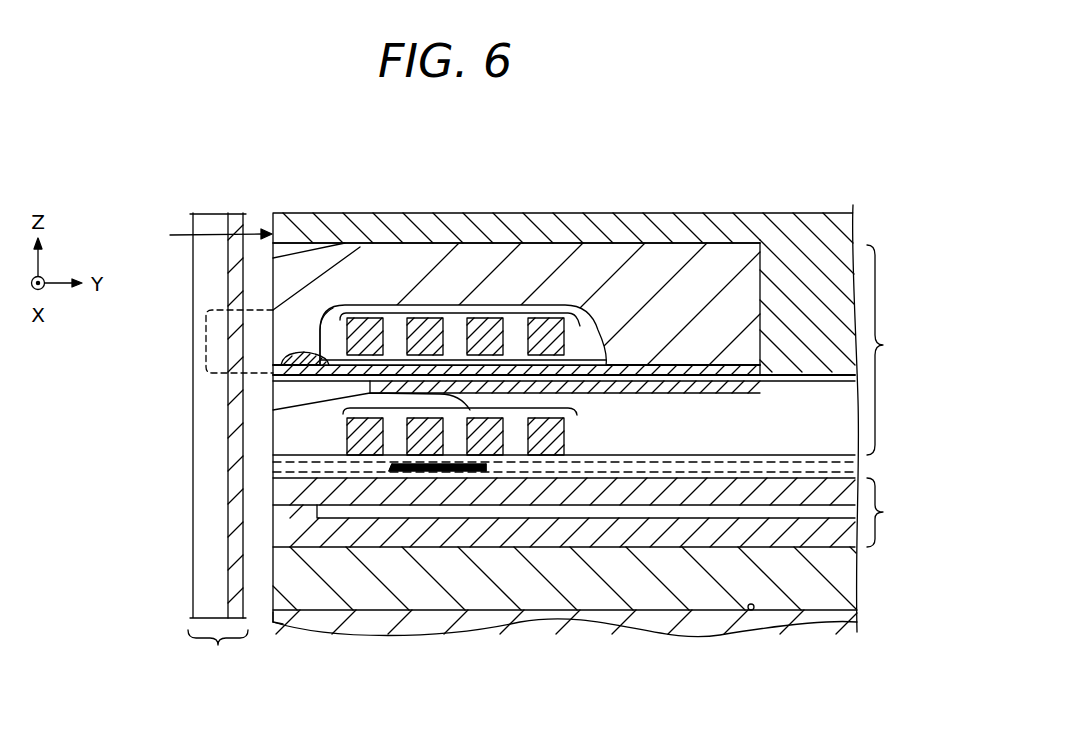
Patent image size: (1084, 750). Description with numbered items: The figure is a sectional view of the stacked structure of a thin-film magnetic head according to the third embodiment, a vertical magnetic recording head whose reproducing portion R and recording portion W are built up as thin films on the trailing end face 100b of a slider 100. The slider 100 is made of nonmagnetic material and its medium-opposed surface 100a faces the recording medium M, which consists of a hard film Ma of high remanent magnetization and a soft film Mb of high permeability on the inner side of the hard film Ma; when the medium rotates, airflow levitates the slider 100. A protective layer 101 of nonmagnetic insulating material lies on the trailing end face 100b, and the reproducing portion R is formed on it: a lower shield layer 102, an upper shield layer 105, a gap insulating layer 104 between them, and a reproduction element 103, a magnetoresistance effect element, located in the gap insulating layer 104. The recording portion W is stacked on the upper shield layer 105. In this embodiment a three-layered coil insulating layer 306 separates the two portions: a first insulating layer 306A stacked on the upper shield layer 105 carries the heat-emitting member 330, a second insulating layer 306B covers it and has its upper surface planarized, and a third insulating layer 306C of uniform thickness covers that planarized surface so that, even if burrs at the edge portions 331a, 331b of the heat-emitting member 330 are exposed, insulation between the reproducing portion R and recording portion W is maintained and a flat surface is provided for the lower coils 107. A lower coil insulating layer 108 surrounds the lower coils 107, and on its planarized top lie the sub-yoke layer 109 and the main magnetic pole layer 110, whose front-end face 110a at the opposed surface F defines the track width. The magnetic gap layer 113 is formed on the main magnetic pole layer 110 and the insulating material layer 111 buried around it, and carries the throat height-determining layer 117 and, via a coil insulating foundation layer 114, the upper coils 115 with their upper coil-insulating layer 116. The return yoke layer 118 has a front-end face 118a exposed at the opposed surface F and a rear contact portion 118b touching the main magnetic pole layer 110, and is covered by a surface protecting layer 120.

The slider 100 is at (688, 623).
The medium-opposed surface 100a is at (274, 622).
The trailing end face 100b is at (754, 612).
The protective layer 101 is at (282, 598).
The lower shield layer 102 is at (282, 513).
The reproduction element 103 is at (282, 528).
The gap insulating layer 104 is at (630, 520).
The upper shield layer 105 is at (280, 490).
The lower coil 107 is at (378, 396).
The lower coil insulating layer 108 is at (292, 430).
The sub-yoke layer 109 is at (400, 387).
The main magnetic pole layer 110 is at (345, 372).
The front-end face 110a is at (330, 362).
The insulating material layer 111 is at (818, 370).
The magnetic gap layer 113 is at (298, 357).
The coil insulating foundation layer 114 is at (597, 312).
The upper coil 115 is at (470, 306).
The upper coil-insulating layer 116 is at (392, 307).
The throat height-determining layer 117 is at (318, 330).
The return yoke layer 118 is at (545, 262).
The front-end face 118a is at (275, 262).
The contact portion 118b is at (709, 272).
The surface protecting layer 120 is at (437, 232).
The coil insulating layer 306 is at (101, 449).
The first insulating layer 306A is at (280, 475).
The second insulating layer 306B is at (280, 466).
The third insulating layer 306C is at (280, 457).
The heat-emitting member 330 is at (440, 474).
The edge portion 331a is at (390, 473).
The edge portion 331b is at (483, 474).
The recording medium M is at (218, 443).
The hard film Ma is at (212, 608).
The soft film Mb is at (238, 598).
The opposed surface F is at (211, 235).
The recording portion W is at (887, 350).
The reproducing portion R is at (885, 512).